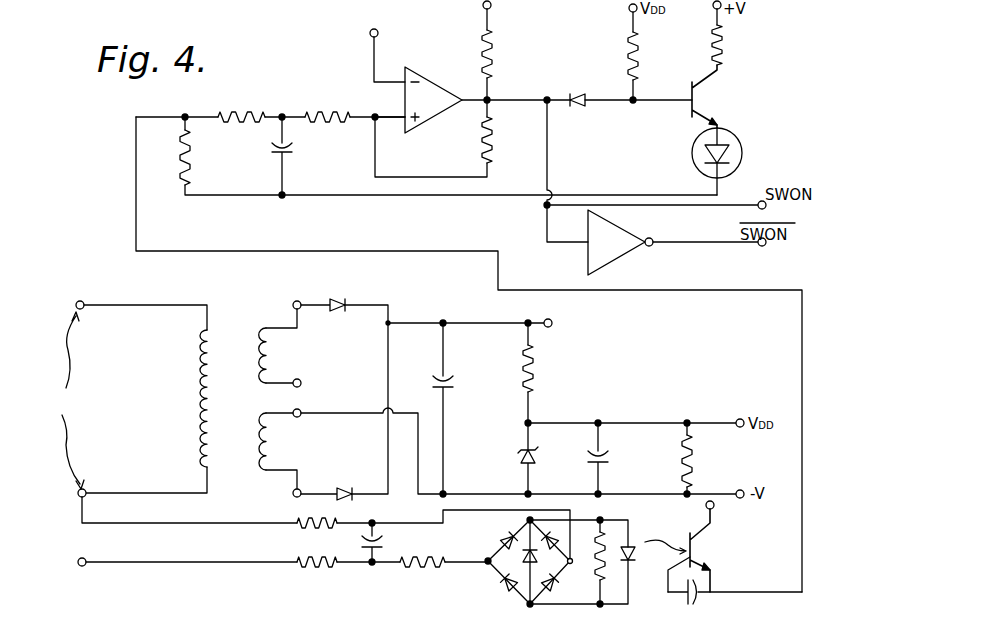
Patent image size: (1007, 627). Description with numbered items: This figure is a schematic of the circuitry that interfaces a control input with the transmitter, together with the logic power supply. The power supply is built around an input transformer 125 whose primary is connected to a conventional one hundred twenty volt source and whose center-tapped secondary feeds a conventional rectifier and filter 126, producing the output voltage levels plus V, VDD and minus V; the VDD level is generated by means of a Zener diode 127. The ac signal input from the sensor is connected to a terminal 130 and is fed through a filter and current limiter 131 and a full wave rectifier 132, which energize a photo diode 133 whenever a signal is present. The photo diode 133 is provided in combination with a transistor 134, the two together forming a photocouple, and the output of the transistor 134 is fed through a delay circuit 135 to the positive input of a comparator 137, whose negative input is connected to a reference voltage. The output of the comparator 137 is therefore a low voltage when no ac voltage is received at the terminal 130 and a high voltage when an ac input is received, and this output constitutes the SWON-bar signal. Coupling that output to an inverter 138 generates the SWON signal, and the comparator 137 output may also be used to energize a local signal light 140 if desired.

The input transformer 125 is at (190, 411).
The rectifier and filter 126 is at (373, 376).
The Zener diode 127 is at (520, 456).
The terminal 130 is at (82, 567).
The filter and current limiter 131 is at (358, 552).
The full wave rectifier 132 is at (493, 547).
The photo diode 133 is at (638, 547).
The transistor 134 is at (694, 545).
The delay circuit 135 is at (248, 169).
The comparator 137 is at (427, 80).
The inverter 138 is at (630, 251).
The local signal light 140 is at (736, 137).